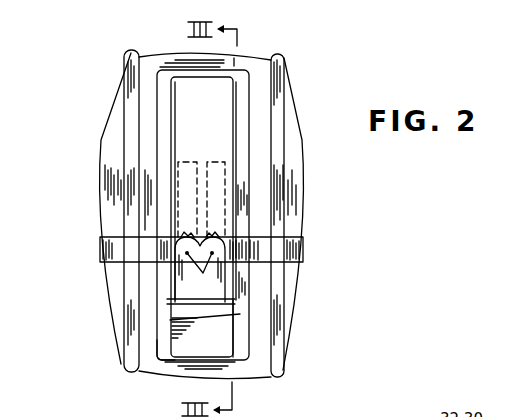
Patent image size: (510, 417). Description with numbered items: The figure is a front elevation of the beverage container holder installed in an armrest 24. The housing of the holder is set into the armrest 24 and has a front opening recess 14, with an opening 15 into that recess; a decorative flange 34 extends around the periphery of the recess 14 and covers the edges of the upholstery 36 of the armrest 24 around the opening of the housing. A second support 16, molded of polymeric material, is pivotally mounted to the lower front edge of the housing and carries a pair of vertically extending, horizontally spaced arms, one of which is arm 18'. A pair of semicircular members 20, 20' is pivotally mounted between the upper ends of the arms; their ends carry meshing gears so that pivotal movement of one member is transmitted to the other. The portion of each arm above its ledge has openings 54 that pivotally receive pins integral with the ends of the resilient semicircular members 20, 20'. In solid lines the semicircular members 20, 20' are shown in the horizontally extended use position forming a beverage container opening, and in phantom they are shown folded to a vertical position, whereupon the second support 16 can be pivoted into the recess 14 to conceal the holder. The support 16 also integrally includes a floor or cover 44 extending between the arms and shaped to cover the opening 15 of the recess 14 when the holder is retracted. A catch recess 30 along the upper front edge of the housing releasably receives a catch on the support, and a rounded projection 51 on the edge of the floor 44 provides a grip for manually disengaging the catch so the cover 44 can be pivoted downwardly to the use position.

The front opening recess 14 is at (213, 112).
The opening 15 is at (217, 130).
The second support 16 is at (173, 352).
The arm 18' is at (290, 315).
The semicircular member 20 is at (289, 206).
The semicircular member 20' is at (178, 203).
The armrest 24 is at (110, 83).
The catch recess 30 is at (226, 79).
The decorative flange 34 is at (162, 113).
The upholstery 36 is at (153, 57).
The floor or cover 44 is at (217, 357).
The rounded projection 51 is at (242, 319).
The openings 54 is at (200, 267).